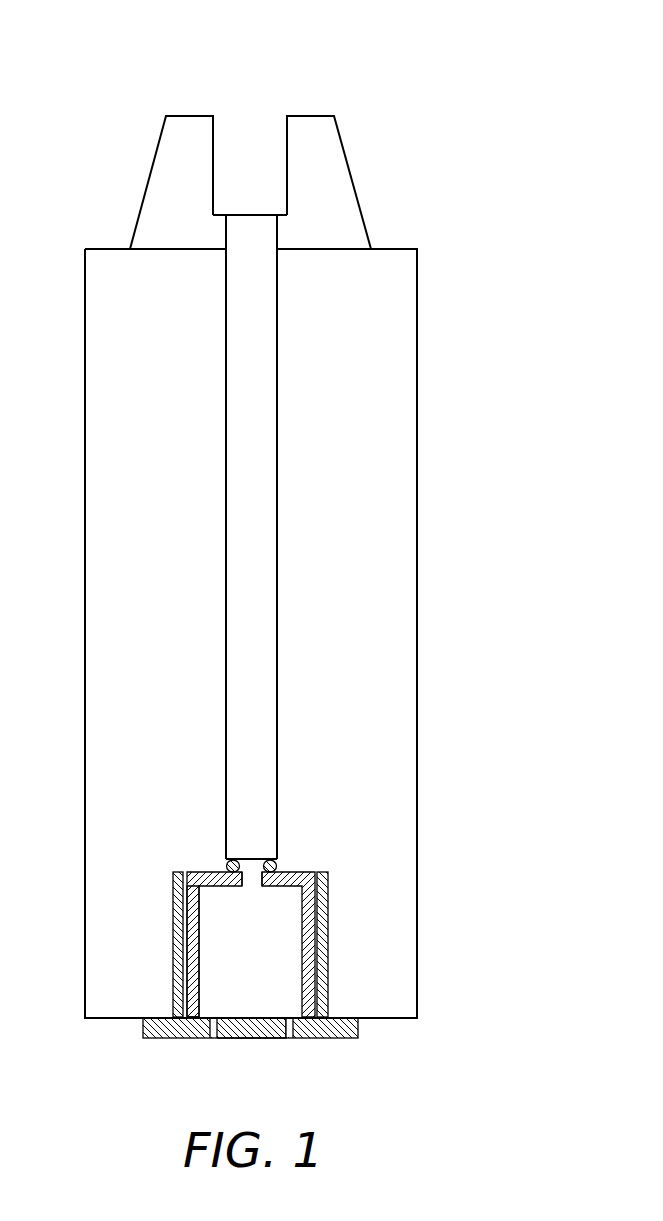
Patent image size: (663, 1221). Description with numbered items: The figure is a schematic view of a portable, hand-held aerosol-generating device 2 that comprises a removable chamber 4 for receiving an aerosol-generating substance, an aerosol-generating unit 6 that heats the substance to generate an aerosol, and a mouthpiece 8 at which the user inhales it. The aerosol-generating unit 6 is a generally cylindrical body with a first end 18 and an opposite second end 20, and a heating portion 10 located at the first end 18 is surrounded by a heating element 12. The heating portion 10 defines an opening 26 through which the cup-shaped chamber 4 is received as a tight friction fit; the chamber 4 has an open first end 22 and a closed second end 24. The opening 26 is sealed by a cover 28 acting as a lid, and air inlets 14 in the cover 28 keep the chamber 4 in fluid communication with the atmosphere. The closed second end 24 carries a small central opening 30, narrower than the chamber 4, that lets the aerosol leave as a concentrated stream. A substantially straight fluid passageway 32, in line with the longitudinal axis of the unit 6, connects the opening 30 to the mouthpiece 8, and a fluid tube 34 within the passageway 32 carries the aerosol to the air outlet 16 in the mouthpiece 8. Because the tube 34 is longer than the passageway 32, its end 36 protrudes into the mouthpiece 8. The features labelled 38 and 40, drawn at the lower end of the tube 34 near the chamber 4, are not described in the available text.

The aerosol-generating device 2 is at (483, 353).
The chamber 4 is at (193, 915).
The aerosol-generating unit 6 is at (93, 353).
The mouthpiece 8 is at (162, 184).
The heating portion 10 is at (316, 965).
The heating element 12 is at (172, 963).
The air inlet 14 is at (208, 1030).
The air outlet 16 is at (262, 123).
The first end 18 is at (392, 1020).
The second end 20 is at (392, 248).
The first end 22 is at (292, 1010).
The second end 24 is at (300, 873).
The opening 26 is at (233, 1010).
The cover 28 is at (143, 1025).
The opening 30 is at (250, 882).
The fluid passageway 32 is at (226, 413).
The fluid tube 34 is at (230, 478).
The end 36 is at (273, 227).
The tube lower end 38 is at (226, 834).
The seal rings 40 is at (228, 866).